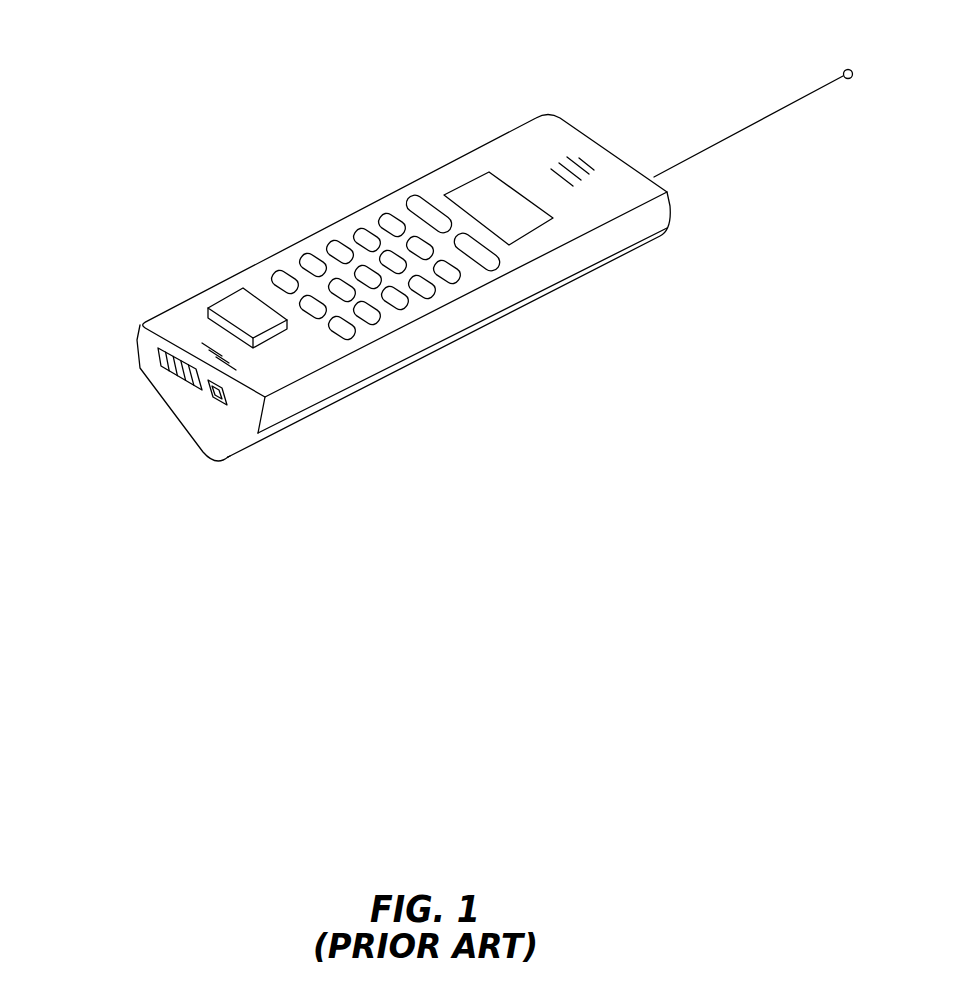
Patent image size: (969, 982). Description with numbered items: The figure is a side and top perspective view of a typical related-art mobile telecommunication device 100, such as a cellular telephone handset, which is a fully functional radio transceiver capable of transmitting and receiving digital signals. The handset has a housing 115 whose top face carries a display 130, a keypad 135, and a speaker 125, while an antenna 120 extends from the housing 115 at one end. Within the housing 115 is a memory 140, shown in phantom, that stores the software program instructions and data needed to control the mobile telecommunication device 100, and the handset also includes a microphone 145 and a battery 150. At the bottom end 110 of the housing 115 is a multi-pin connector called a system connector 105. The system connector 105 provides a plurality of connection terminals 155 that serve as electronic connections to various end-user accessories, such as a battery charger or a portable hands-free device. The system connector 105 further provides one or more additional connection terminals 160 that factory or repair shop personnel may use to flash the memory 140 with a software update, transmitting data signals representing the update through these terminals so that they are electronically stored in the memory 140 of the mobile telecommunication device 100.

The mobile telecommunication device 100 is at (429, 278).
The system connector 105 is at (118, 351).
The bottom end 110 is at (147, 345).
The housing 115 is at (614, 234).
The antenna 120 is at (757, 121).
The speaker 125 is at (590, 150).
The display 130 is at (487, 198).
The keypad 135 is at (352, 224).
The memory 140 is at (244, 308).
The microphone 145 is at (228, 381).
The battery 150 is at (227, 442).
The connection terminals 155 is at (179, 358).
The additional connection terminals 160 is at (218, 400).